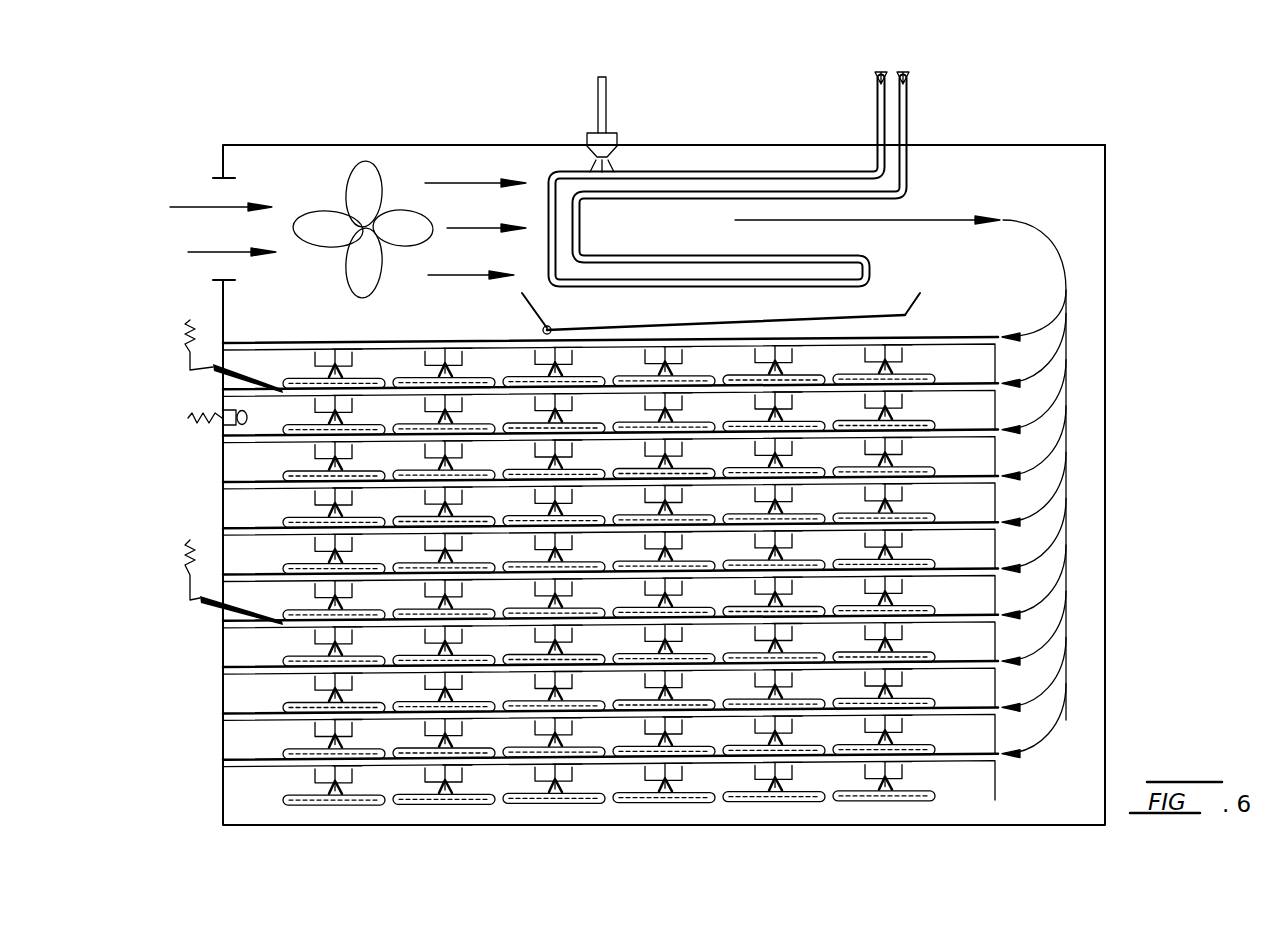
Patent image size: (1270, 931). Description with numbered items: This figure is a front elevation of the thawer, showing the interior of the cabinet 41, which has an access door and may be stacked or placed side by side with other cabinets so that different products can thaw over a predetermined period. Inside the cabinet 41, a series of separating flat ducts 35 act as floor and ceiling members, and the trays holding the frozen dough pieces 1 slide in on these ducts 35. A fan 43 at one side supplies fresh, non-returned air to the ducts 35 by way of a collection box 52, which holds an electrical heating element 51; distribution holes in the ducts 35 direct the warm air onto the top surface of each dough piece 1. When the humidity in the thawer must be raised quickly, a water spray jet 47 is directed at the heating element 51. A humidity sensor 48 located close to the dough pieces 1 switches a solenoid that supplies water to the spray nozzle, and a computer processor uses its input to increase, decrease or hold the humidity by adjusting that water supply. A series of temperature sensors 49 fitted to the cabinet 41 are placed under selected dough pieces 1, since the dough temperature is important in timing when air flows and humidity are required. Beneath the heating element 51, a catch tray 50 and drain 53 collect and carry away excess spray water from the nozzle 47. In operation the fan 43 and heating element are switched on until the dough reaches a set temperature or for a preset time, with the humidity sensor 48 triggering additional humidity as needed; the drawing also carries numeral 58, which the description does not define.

The dough piece 1 is at (748, 425).
The separating flat duct 35 is at (838, 392).
The cabinet 41 is at (508, 143).
The fan 43 is at (362, 177).
The water spray jet 47 is at (612, 135).
The humidity sensor 48 is at (190, 420).
The temperature sensor 49 is at (188, 370).
The catch tray 50 is at (920, 300).
The electrical heating element 51 is at (762, 176).
The collection box 52 is at (948, 243).
The drain 53 is at (550, 326).
The spray nozzles 58 is at (403, 400).